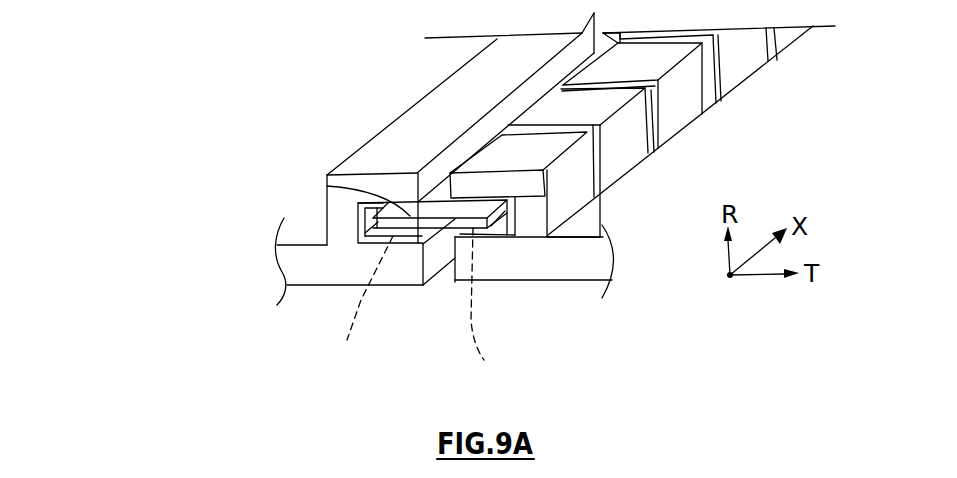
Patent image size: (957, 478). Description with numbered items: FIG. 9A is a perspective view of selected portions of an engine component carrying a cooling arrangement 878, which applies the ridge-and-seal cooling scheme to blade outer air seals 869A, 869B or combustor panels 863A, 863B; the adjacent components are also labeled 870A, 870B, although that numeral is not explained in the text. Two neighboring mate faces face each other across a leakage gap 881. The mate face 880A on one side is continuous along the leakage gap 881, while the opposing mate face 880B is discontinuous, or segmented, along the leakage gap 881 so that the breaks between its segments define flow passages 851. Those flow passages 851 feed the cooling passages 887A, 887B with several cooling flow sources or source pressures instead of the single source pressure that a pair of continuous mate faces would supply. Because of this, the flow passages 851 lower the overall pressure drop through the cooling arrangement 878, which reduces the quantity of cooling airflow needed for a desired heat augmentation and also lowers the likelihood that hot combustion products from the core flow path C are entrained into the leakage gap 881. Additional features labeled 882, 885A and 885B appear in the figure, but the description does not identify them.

The cooling arrangement 878 is at (554, 72).
The flow passages 851 is at (593, 153).
The mate face 880A is at (470, 150).
The mate face 880B is at (543, 182).
The recess 882 is at (328, 187).
The leakage gap 881 is at (439, 303).
The first clip 885A is at (377, 228).
The second clip 885B is at (485, 238).
The cooling passage 887A is at (345, 348).
The cooling passage 887B is at (483, 361).
The first base segment 870A is at (254, 280).
The combustor panel 863A is at (295, 280).
The blade outer air seal 869A is at (309, 300).
The second base segment 870B is at (631, 283).
The combustor panel 863B is at (631, 283).
The blade outer air seal 869B is at (569, 300).
The core flow path C is at (458, 358).